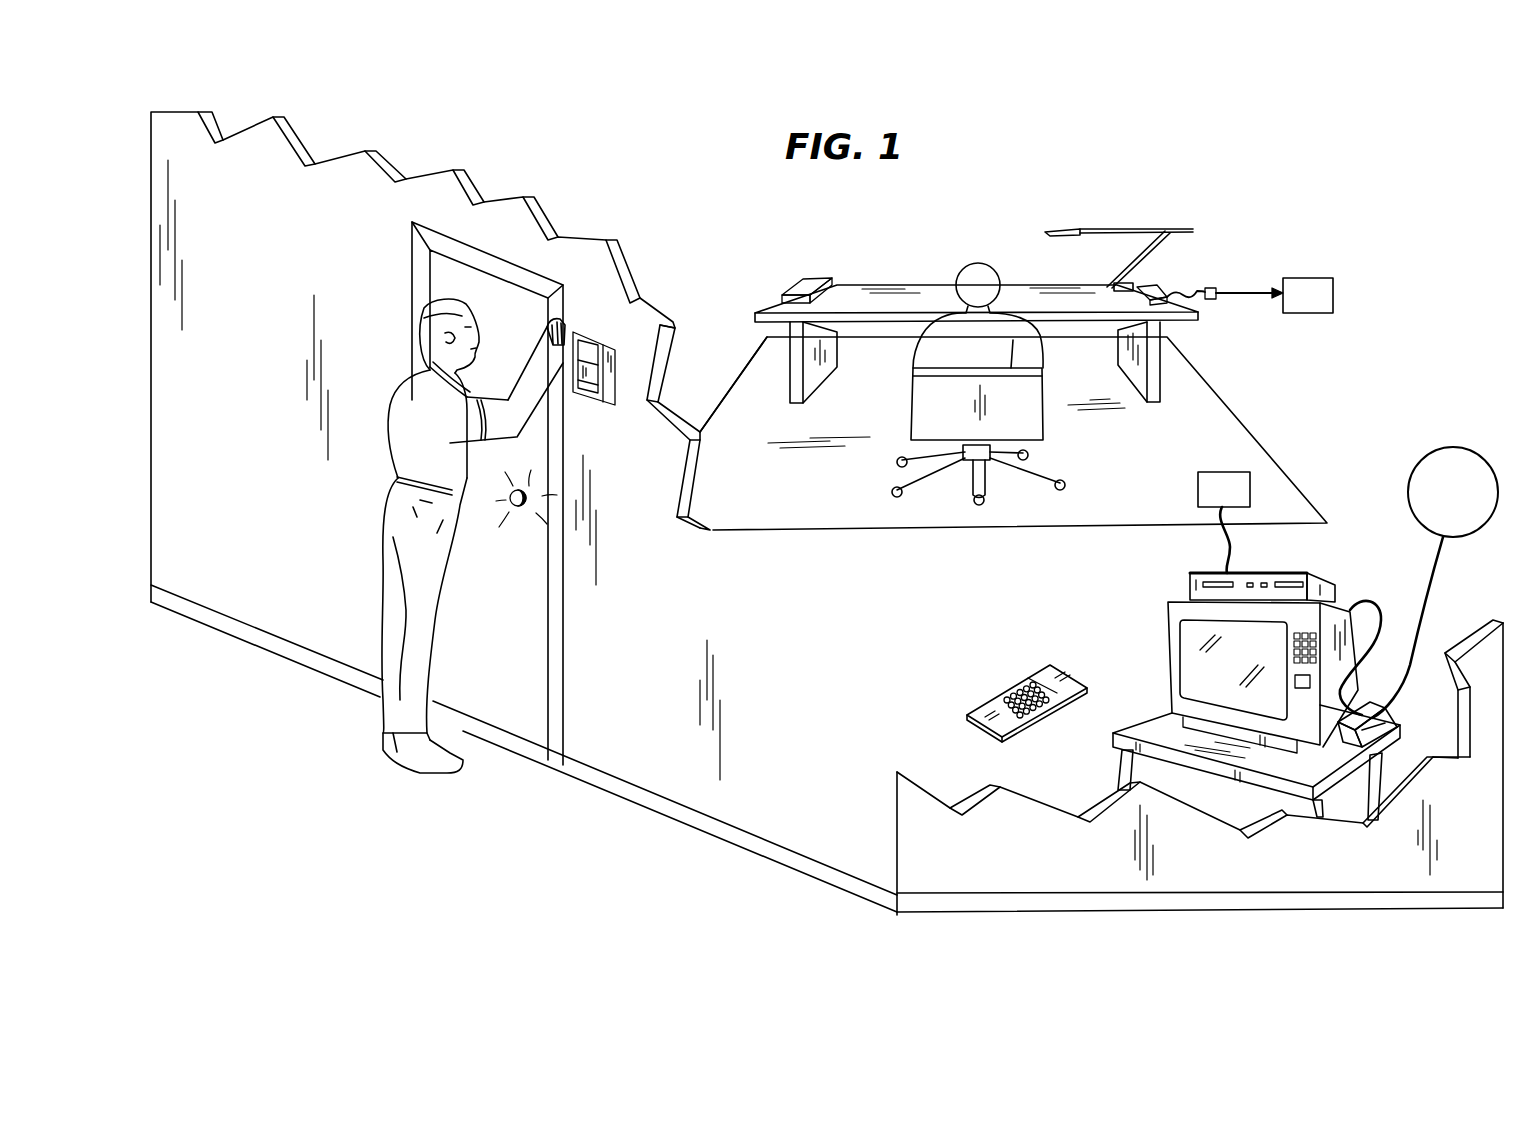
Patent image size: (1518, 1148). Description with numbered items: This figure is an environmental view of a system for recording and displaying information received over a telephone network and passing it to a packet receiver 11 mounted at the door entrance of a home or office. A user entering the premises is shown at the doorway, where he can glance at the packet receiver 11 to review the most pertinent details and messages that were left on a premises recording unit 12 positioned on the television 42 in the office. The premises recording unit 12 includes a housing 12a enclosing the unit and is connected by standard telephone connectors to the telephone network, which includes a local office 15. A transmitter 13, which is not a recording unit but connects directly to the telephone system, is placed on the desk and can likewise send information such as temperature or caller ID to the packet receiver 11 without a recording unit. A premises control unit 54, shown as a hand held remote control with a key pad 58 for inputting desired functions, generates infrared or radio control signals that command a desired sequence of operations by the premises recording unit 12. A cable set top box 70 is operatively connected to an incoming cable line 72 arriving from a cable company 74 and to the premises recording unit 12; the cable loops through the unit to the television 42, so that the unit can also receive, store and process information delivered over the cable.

The packet receiver 11 is at (632, 356).
The transmitter 13 is at (1153, 285).
The local office 15 is at (1333, 288).
The premises recording unit 12 is at (1239, 622).
The housing 12a is at (1190, 583).
The television 42 is at (1172, 662).
The premises control unit 54 is at (1027, 681).
The key pad 58 is at (1015, 690).
The cable set top box 70 is at (1380, 713).
The incoming cable line 72 is at (1380, 600).
The cable company 74 is at (1478, 528).